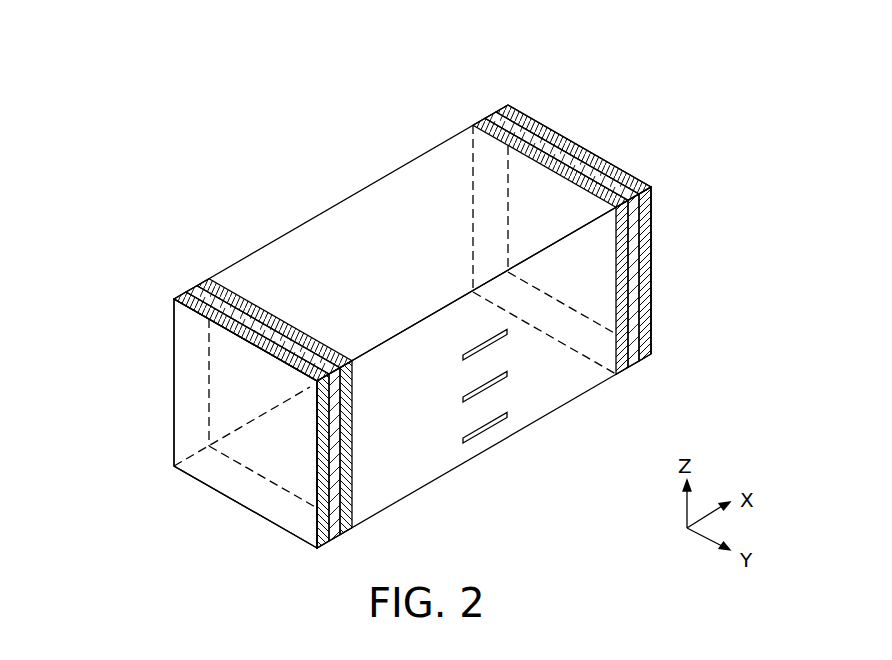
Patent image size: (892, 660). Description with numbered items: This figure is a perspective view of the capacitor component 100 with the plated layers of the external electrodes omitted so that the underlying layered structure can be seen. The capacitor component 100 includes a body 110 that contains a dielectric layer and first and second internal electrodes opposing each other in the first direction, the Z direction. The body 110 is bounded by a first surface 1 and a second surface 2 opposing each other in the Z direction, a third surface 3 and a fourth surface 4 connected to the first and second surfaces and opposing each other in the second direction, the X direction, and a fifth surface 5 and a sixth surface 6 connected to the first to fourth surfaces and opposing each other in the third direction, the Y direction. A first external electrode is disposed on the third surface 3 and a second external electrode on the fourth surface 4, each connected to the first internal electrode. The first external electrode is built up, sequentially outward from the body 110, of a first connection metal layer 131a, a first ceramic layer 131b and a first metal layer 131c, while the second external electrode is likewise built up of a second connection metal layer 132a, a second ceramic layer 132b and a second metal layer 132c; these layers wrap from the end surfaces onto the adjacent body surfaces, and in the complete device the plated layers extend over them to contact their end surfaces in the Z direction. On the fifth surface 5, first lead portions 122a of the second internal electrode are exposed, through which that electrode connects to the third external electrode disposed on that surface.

The capacitor component 100 is at (179, 85).
The body 110 is at (355, 205).
The first surface 1 is at (432, 430).
The second surface 2 is at (408, 188).
The third surface 3 is at (218, 398).
The fourth surface 4 is at (600, 275).
The fifth surface 5 is at (548, 386).
The sixth surface 6 is at (350, 258).
The first lead portion 122a is at (495, 428).
The first connection metal layer 131a is at (230, 288).
The first ceramic layer 131b is at (193, 283).
The first metal layer 131c is at (183, 335).
The second connection metal layer 132a is at (482, 120).
The second ceramic layer 132b is at (495, 112).
The second metal layer 132c is at (528, 120).